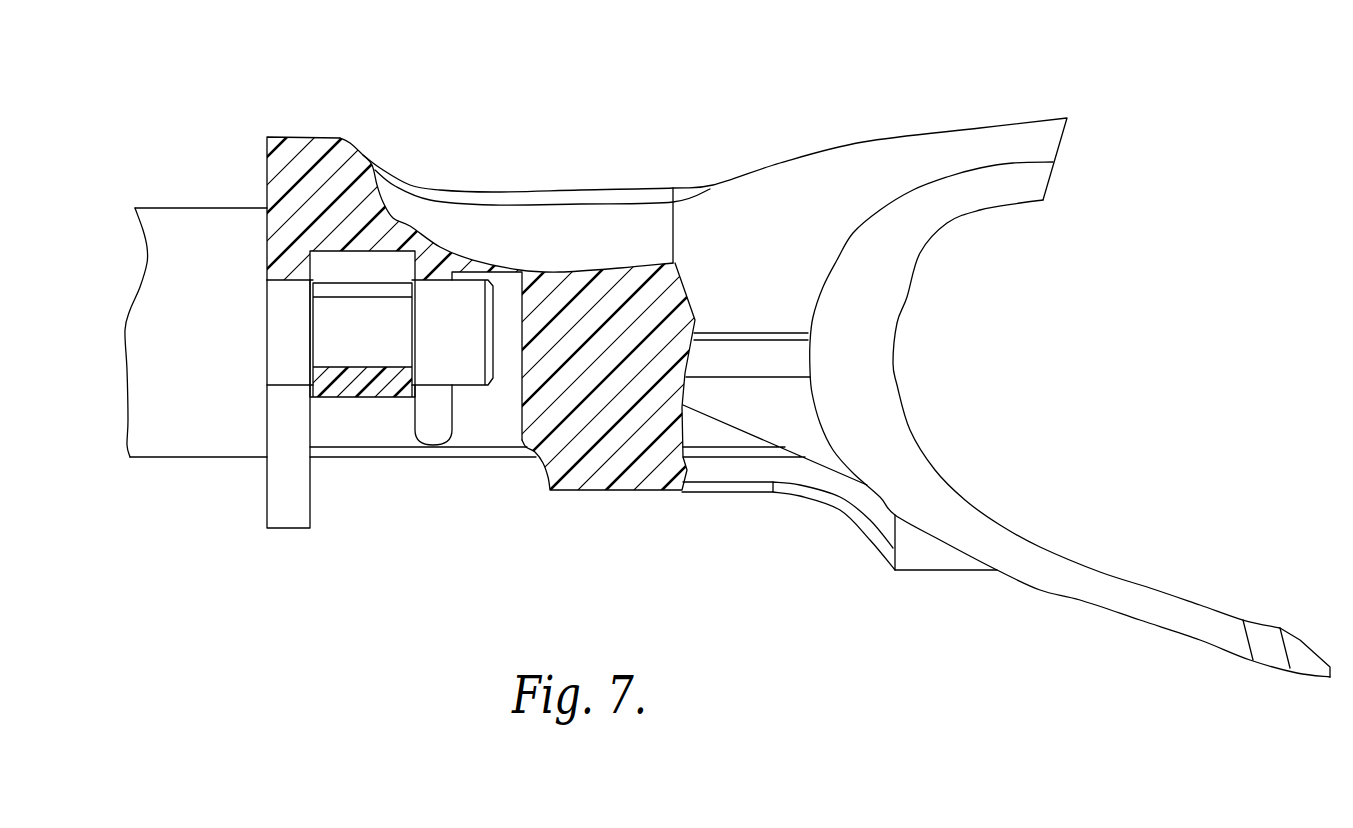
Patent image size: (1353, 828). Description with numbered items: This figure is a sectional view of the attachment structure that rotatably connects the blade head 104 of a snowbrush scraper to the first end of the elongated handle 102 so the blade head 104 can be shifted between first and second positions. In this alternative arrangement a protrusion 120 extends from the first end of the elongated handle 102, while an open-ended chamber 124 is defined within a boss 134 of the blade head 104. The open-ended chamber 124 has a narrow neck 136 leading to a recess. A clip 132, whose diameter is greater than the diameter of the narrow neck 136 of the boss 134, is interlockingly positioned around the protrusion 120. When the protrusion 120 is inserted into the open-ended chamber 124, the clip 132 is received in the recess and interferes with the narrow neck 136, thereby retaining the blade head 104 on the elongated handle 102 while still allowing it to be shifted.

The elongated handle 102 is at (192, 205).
The blade head 104 is at (603, 158).
The protrusion 120 is at (382, 347).
The open-ended chamber 124 is at (337, 430).
The clip 132 is at (342, 290).
The boss 134 is at (278, 505).
The narrow neck 136 is at (257, 377).